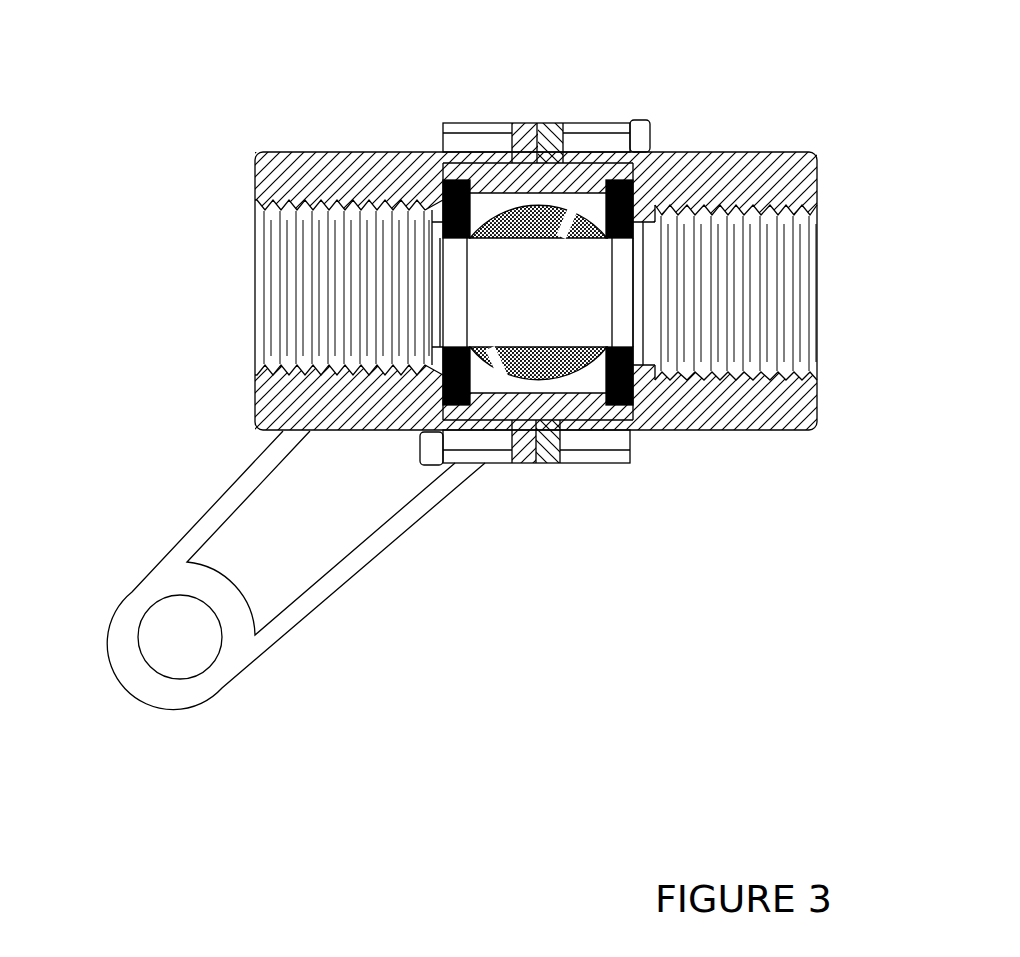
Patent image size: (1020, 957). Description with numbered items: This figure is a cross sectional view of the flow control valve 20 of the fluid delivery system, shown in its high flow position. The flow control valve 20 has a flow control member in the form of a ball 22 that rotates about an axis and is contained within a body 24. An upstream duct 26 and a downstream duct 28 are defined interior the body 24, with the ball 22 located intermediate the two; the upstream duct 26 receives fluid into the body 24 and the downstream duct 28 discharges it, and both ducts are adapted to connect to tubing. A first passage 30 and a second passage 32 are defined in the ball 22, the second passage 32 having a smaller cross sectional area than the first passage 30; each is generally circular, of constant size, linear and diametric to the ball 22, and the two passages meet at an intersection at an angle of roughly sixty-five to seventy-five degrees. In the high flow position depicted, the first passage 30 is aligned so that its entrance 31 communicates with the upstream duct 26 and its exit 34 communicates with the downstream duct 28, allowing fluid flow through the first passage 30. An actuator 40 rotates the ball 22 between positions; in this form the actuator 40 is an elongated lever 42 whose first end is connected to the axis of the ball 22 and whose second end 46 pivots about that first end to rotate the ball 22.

The flow control valve 20 is at (513, 295).
The ball 22 is at (487, 215).
The body 24 is at (808, 432).
The upstream duct 26 is at (305, 250).
The downstream duct 28 is at (743, 258).
The first passage 30 is at (545, 310).
The entrance of the first passage 31 is at (458, 283).
The second passage 32 is at (572, 225).
The exit of the first passage 34 is at (608, 298).
The actuator 40 is at (269, 600).
The lever 42 is at (114, 637).
The second end 46 is at (228, 684).